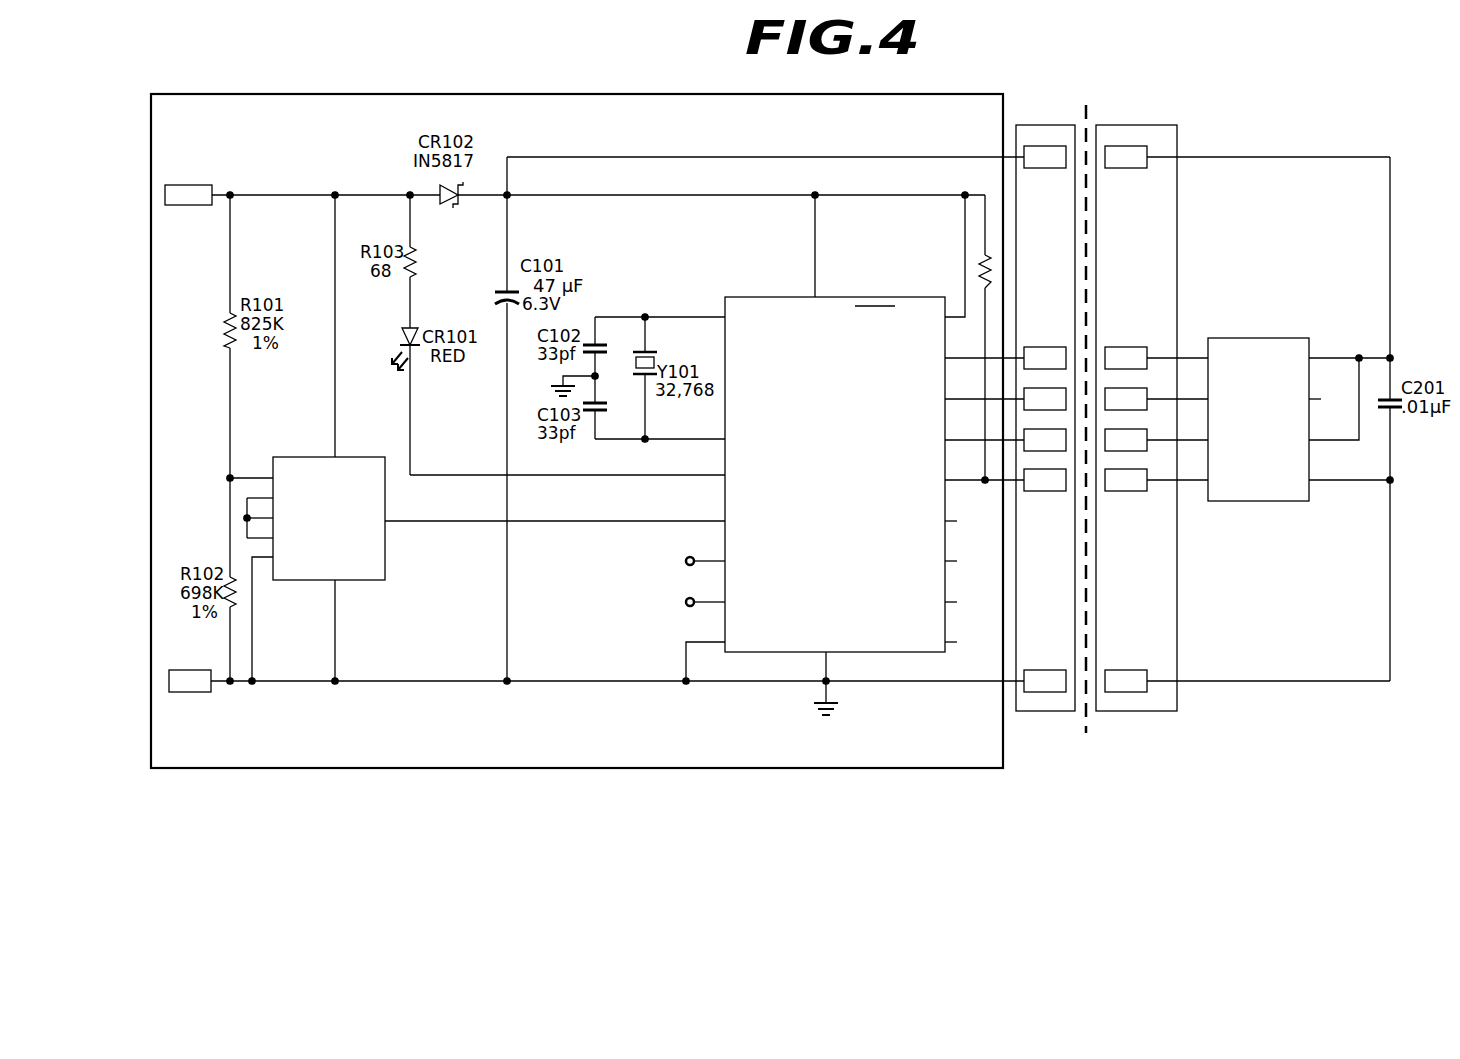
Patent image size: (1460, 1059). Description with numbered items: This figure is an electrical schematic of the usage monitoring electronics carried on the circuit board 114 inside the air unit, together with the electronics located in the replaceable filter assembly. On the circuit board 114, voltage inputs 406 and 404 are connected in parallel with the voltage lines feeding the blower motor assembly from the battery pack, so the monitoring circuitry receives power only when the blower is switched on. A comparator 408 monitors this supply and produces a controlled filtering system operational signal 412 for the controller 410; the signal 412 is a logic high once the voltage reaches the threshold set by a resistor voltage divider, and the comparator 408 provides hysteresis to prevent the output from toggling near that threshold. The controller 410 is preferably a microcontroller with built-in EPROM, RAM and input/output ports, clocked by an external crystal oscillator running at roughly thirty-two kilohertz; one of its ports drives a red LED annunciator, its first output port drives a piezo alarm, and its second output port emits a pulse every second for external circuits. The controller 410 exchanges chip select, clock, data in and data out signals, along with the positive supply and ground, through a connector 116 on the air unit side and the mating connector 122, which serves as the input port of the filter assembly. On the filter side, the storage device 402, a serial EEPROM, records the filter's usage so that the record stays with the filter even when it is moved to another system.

The circuit board 114 is at (905, 770).
The air unit connector 116 is at (1057, 122).
The connector 122 is at (1133, 122).
The storage device 402 is at (1275, 501).
The voltage input 404 is at (198, 692).
The voltage input 406 is at (192, 183).
The comparator 408 is at (385, 557).
The controller 410 is at (848, 297).
The filtering system operational signal 412 is at (567, 522).